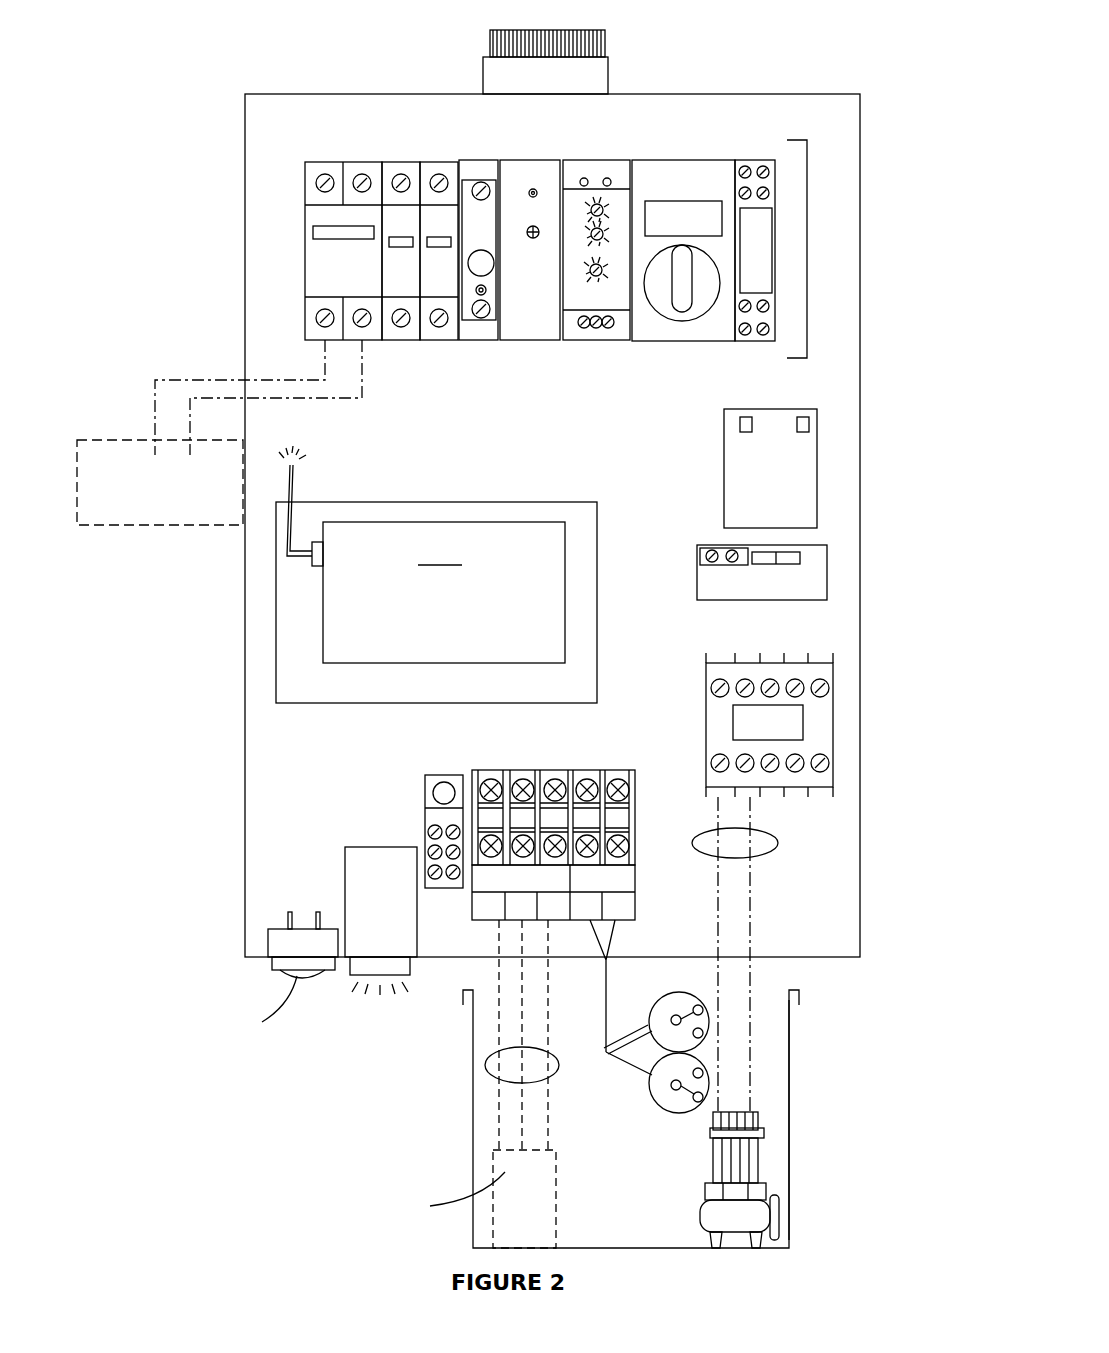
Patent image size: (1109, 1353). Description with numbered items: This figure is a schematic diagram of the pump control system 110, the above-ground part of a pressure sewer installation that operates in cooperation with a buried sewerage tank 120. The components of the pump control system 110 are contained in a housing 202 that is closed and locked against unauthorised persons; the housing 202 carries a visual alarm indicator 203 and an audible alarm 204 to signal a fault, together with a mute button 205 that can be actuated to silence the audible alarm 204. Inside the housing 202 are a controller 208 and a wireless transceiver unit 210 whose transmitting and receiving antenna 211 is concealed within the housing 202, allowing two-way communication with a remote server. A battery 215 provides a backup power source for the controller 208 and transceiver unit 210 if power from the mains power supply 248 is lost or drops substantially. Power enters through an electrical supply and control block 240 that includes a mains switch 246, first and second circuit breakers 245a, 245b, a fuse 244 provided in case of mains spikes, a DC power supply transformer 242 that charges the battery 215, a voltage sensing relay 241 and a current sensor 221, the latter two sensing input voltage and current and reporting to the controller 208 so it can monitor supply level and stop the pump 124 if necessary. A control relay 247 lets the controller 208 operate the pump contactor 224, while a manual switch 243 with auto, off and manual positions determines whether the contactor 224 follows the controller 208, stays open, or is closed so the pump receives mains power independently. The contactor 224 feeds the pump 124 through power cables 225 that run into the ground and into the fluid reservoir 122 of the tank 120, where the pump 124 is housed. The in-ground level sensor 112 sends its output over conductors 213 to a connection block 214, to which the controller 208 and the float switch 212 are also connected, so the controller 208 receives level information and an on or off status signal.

The pump control system 110 is at (802, 66).
The housing 202 is at (860, 348).
The visual alarm indicator 203 is at (596, 34).
The audible alarm 204 is at (360, 882).
The mute button 205 is at (278, 972).
The controller 208 is at (281, 705).
The wireless transceiver unit 210 is at (444, 592).
The antenna 211 is at (292, 492).
The float switch 212 is at (620, 1104).
The output conductors 213 is at (487, 1057).
The connection block 214 is at (515, 773).
The battery 215 is at (813, 466).
The current sensor 221 is at (825, 568).
The pump contactor 224 is at (822, 720).
The power cables 225 is at (778, 843).
The electrical supply and control block 240 is at (807, 242).
The voltage sensing relay 241 is at (623, 166).
The DC power supply transformer 242 is at (524, 342).
The manual switch 243 is at (686, 170).
The fuse 244 is at (479, 184).
The first circuit breaker 245a is at (402, 165).
The second circuit breaker 245b is at (440, 165).
The mains switch 246 is at (312, 216).
The 12 VDC control relay 247 is at (753, 163).
The mains power supply 248 is at (128, 525).
The level sensor 112 is at (558, 1220).
The sewerage tank 120 is at (838, 1008).
The fluid reservoir 122 is at (789, 1087).
The pump 124 is at (760, 1192).